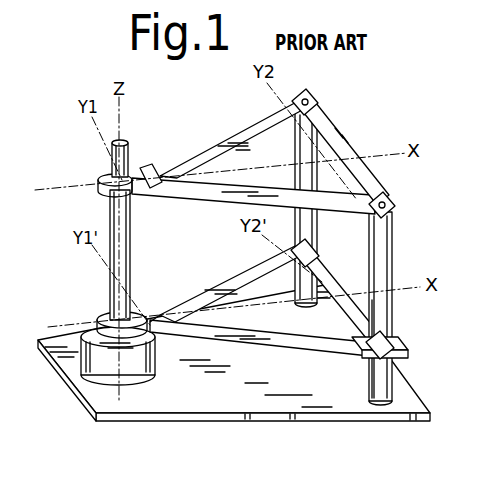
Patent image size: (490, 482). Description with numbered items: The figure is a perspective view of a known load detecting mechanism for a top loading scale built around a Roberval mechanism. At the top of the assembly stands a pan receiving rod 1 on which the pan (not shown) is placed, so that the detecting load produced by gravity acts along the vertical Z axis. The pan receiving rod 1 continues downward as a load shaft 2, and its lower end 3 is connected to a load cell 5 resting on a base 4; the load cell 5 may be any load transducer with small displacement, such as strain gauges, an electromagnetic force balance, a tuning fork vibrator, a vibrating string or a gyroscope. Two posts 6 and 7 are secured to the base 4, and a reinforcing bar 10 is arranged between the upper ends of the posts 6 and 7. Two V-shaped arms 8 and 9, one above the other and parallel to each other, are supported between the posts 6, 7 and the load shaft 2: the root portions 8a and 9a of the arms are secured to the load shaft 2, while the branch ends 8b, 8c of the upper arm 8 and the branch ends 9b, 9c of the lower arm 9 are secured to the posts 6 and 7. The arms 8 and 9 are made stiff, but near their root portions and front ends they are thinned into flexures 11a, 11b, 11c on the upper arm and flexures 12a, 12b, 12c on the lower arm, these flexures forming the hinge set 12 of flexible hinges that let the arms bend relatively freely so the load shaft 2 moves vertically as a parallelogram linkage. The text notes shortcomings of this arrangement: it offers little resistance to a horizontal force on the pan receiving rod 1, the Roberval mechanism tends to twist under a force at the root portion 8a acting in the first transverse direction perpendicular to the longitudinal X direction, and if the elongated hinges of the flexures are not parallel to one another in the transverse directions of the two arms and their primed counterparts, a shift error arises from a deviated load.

The pan receiving rod 1 is at (112, 153).
The load shaft 2 is at (110, 213).
The lower end 3 is at (100, 337).
The base 4 is at (120, 420).
The load cell 5 is at (92, 370).
The post 6 is at (368, 242).
The post 7 is at (387, 313).
The V-shaped arm 8 is at (262, 153).
The root portion 8a is at (110, 178).
The branch end 8b is at (256, 133).
The branch end 8c is at (373, 177).
The V-shaped arm 9 is at (254, 356).
The root portion 9a is at (110, 317).
The branch end 9b is at (260, 272).
The branch end 9c is at (400, 350).
The reinforcing bar 10 is at (345, 146).
The flexure 11a is at (141, 172).
The flexure 11b is at (318, 110).
The flexure 11c is at (397, 207).
The connecting link 12 is at (342, 299).
The flexure 12a is at (168, 335).
The flexure 12b is at (297, 273).
The flexure 12c is at (352, 340).